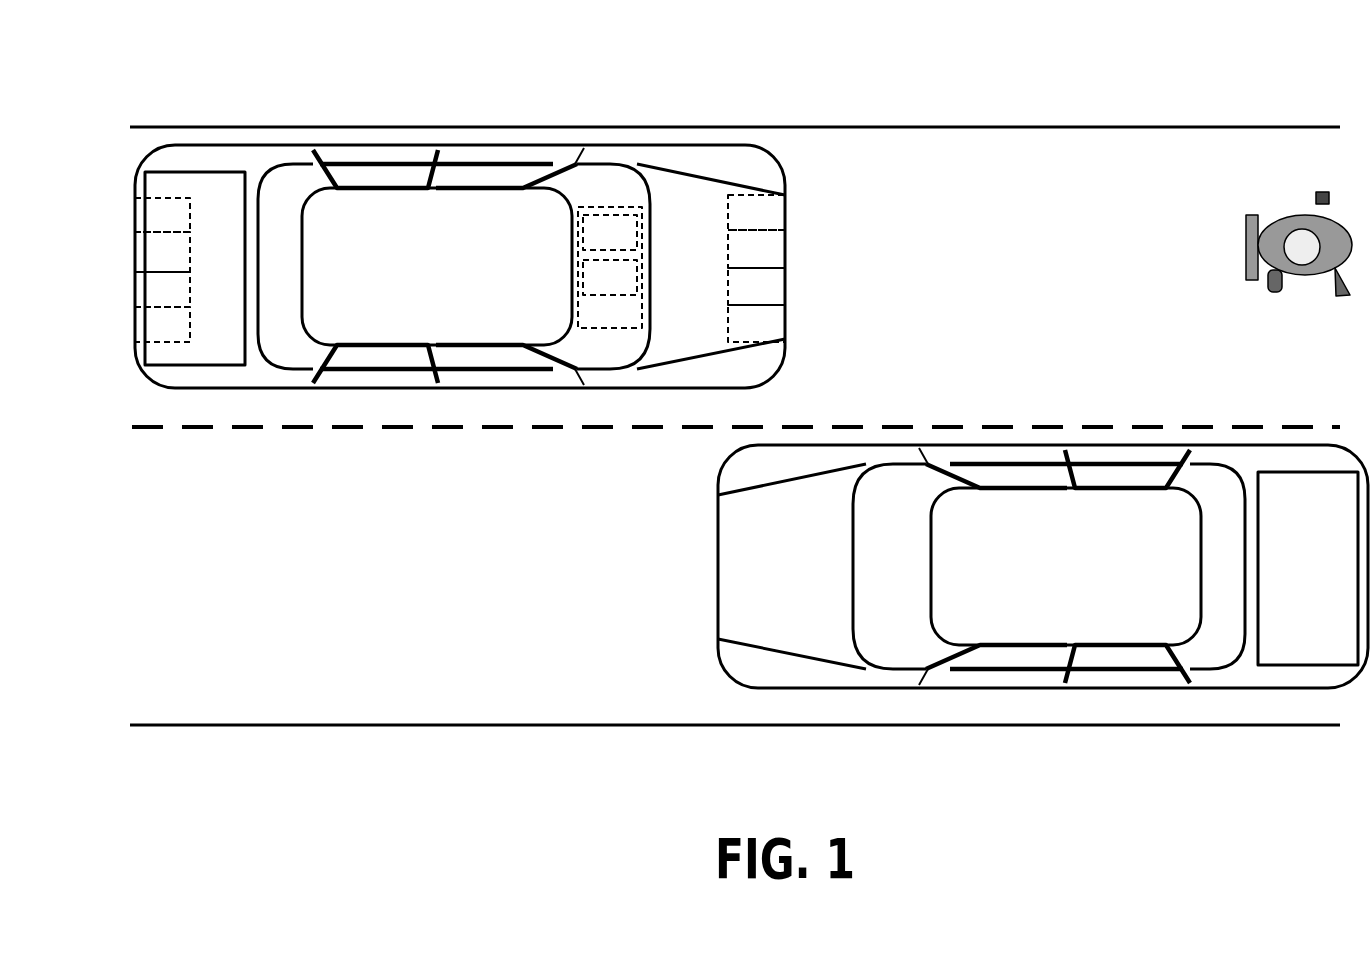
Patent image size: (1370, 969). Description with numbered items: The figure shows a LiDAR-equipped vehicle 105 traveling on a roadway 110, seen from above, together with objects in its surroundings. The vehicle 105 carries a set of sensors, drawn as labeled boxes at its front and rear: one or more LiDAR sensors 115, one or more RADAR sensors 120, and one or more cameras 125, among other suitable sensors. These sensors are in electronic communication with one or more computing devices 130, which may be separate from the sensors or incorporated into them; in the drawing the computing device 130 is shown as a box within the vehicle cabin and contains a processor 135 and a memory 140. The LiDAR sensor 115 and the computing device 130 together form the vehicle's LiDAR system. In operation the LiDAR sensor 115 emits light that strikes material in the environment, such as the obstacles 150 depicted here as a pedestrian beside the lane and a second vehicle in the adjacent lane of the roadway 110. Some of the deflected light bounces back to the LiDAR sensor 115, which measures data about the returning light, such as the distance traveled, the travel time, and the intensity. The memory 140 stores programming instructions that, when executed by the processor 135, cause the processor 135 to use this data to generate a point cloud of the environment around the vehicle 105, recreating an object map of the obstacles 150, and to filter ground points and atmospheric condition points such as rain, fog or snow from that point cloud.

The LiDAR-equipped vehicle 105 is at (631, 146).
The roadway 110 is at (856, 158).
The LiDAR sensor 115 is at (180, 264).
The RADAR sensor 120 is at (180, 302).
The camera 125 is at (180, 229).
The computing device 130 is at (627, 326).
The processor 135 is at (627, 245).
The memory 140 is at (627, 290).
The obstacle 150 is at (1250, 240).